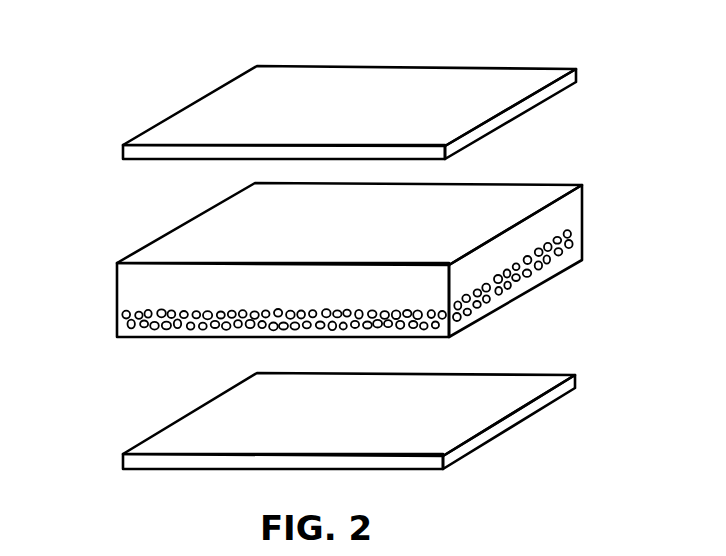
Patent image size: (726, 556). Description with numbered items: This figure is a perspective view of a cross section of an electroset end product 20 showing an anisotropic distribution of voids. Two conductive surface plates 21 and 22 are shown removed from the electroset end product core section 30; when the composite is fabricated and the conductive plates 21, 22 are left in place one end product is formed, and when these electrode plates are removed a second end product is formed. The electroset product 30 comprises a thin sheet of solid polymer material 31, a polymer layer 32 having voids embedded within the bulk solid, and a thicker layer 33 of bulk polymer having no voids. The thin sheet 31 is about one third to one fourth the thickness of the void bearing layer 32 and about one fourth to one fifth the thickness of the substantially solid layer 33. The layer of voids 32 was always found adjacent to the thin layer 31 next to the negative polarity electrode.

The electroset end product 20 is at (605, 60).
The conductive surface plate 21 is at (500, 428).
The conductive surface plate 22 is at (543, 95).
The electroset end product core section 30 is at (602, 216).
The thin sheet of solid polymer material 31 is at (557, 270).
The polymer layer having voids 32 is at (188, 320).
The thicker layer of bulk polymer having no voids 33 is at (130, 289).